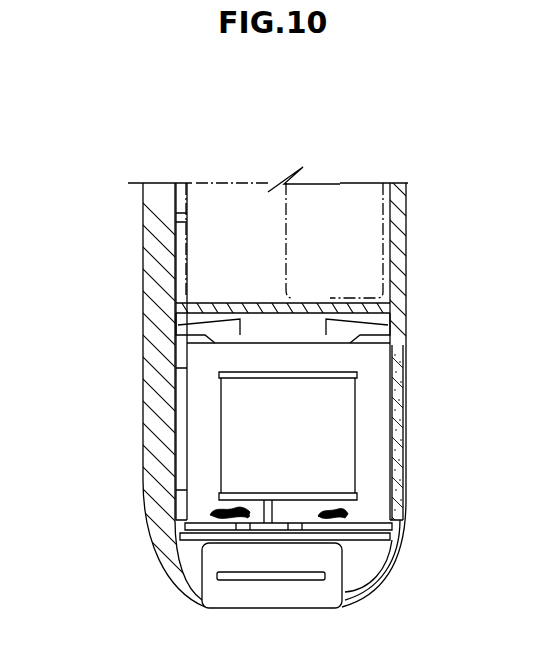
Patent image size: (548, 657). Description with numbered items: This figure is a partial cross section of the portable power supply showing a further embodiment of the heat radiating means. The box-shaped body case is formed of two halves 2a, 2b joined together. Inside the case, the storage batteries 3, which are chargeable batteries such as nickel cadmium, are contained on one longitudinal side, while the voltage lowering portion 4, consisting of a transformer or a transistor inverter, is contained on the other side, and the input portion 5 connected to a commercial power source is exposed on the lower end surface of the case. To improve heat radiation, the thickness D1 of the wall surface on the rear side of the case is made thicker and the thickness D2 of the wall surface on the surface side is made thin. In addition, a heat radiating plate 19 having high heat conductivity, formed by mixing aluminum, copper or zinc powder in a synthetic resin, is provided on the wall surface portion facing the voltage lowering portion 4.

The half of body case 2a is at (408, 250).
The half of body case 2b is at (143, 276).
The storage battery 3 is at (337, 218).
The voltage lowering portion 4 is at (242, 450).
The input portion 5 is at (303, 612).
The heat radiating plate 19 is at (408, 411).
The thickness of rear side wall surface D1 is at (175, 171).
The thickness of surface side wall surface D2 is at (403, 168).